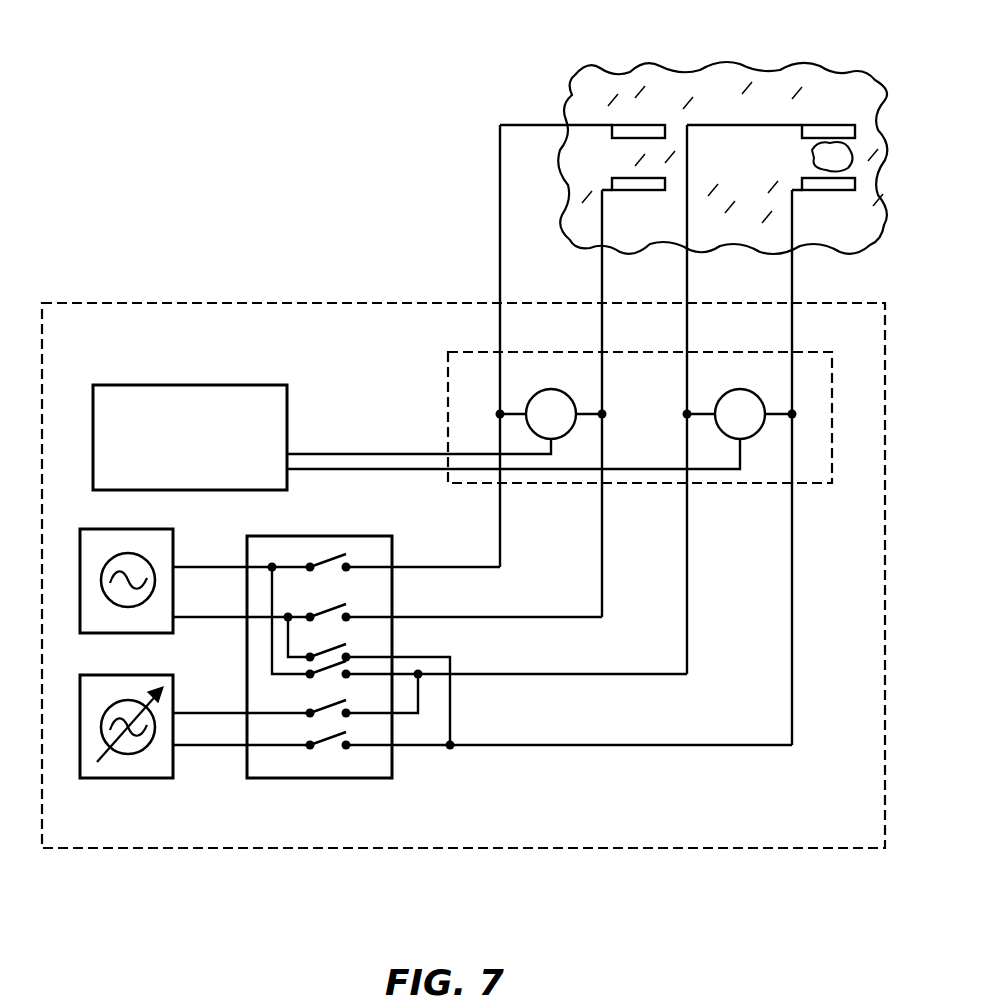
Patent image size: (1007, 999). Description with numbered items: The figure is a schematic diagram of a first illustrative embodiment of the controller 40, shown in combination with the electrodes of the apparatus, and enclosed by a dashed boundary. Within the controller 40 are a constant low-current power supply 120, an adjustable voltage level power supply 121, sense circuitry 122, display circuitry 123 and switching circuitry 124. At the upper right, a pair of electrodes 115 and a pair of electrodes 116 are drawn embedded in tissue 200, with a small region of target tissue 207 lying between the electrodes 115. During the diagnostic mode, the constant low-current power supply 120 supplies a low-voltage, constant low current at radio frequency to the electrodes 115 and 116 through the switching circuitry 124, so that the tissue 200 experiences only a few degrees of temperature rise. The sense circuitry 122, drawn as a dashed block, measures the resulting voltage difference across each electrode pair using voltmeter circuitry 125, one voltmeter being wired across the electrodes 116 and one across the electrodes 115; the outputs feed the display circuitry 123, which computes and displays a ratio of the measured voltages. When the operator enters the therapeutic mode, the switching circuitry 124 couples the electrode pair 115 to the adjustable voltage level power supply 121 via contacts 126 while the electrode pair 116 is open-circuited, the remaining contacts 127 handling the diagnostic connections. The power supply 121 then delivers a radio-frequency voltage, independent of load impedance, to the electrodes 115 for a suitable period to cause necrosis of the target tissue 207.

The controller 40 is at (795, 848).
The tissue 200 is at (822, 65).
The electrode 116 is at (612, 182).
The electrode 115 is at (855, 130).
The target tissue 207 is at (812, 155).
The sense circuitry 122 is at (448, 373).
The voltmeter circuitry 125 is at (713, 430).
The display circuitry 123 is at (230, 385).
The constant low-current power supply 120 is at (177, 550).
The adjustable voltage level power supply 121 is at (143, 782).
The switching circuitry 124 is at (357, 778).
The contacts 127 is at (303, 598).
The contacts 126 is at (330, 708).